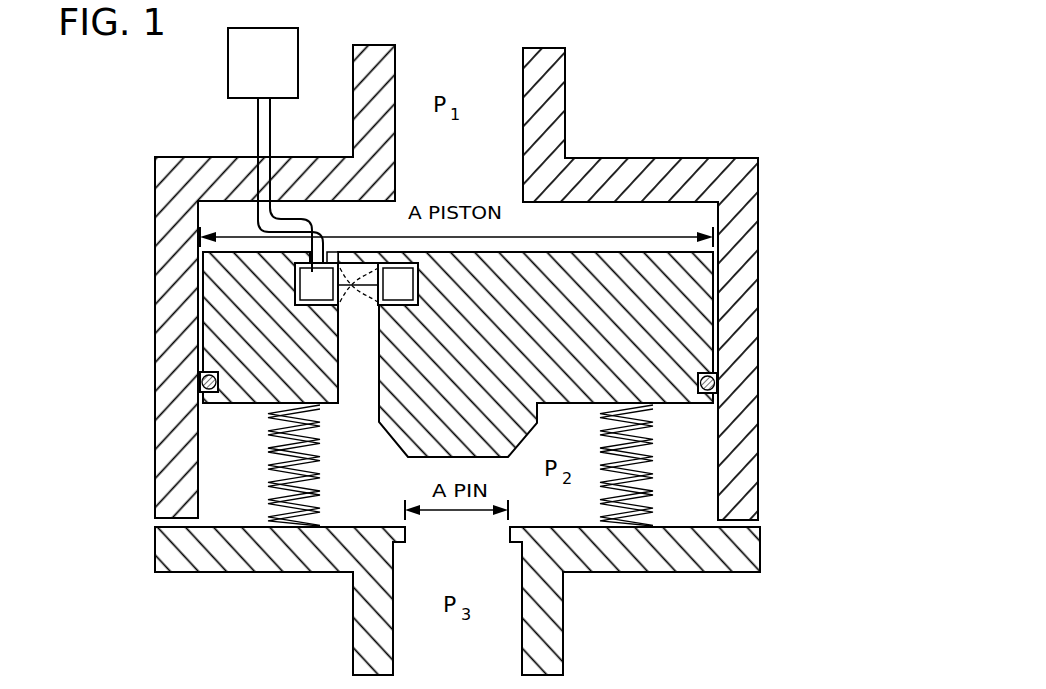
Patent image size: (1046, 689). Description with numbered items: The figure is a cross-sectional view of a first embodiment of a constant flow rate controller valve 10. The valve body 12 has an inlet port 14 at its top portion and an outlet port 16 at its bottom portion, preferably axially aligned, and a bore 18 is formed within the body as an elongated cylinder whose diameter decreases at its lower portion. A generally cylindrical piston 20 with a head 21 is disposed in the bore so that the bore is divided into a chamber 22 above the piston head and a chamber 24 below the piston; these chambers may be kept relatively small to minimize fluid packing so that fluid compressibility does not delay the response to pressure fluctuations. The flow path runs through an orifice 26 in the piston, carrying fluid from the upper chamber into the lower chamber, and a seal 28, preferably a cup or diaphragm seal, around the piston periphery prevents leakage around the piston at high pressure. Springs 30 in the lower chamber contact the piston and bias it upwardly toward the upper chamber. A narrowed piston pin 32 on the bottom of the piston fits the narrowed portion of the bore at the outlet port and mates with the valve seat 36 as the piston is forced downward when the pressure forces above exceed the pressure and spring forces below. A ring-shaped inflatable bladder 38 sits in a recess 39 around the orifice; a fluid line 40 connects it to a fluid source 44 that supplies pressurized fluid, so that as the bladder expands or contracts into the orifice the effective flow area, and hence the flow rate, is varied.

The constant flow rate controller valve 10 is at (645, 87).
The valve body 12 is at (575, 158).
The inlet port 14 is at (500, 78).
The outlet port 16 is at (495, 655).
The bore 18 is at (712, 320).
The piston 20 is at (690, 283).
The head 21 is at (620, 252).
The chamber 22 is at (688, 212).
The chamber 24 is at (692, 466).
The orifice 26 is at (345, 343).
The seal 28 is at (718, 390).
The springs 30 is at (270, 455).
The piston pin 32 is at (395, 440).
The valve seat 36 is at (510, 542).
The inflatable bladder 38 is at (295, 287).
The recess 39 is at (338, 318).
The fluid line 40 is at (257, 205).
The fluid source 44 is at (228, 79).